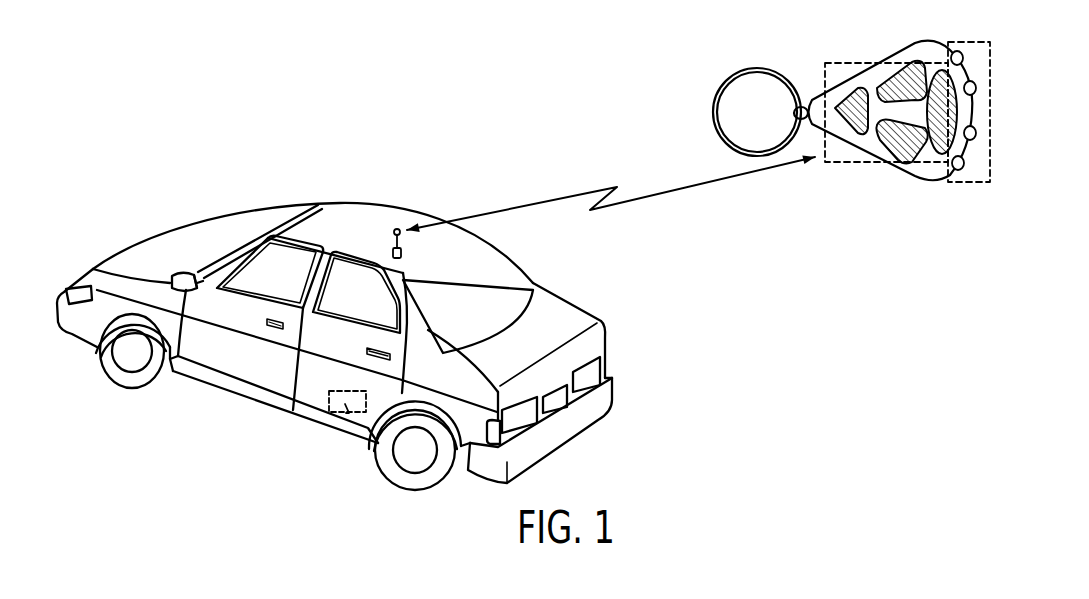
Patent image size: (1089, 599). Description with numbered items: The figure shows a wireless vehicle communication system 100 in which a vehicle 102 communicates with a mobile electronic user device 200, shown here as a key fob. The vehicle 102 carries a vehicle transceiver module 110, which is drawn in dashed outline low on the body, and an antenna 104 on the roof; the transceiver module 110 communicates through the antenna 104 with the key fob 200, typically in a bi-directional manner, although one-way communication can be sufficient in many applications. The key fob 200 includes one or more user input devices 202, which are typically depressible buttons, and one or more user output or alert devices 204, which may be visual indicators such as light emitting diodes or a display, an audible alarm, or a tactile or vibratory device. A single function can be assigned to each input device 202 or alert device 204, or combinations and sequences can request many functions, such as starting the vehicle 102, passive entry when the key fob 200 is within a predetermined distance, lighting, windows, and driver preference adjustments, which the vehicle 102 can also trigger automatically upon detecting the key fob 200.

The wireless vehicle communication system 100 is at (126, 150).
The vehicle 102 is at (267, 405).
The antenna 104 is at (393, 233).
The vehicle transceiver module 110 is at (342, 414).
The mobile electronic user device 200 is at (907, 178).
The user input device 202 is at (845, 62).
The user output or alert device 204 is at (990, 110).